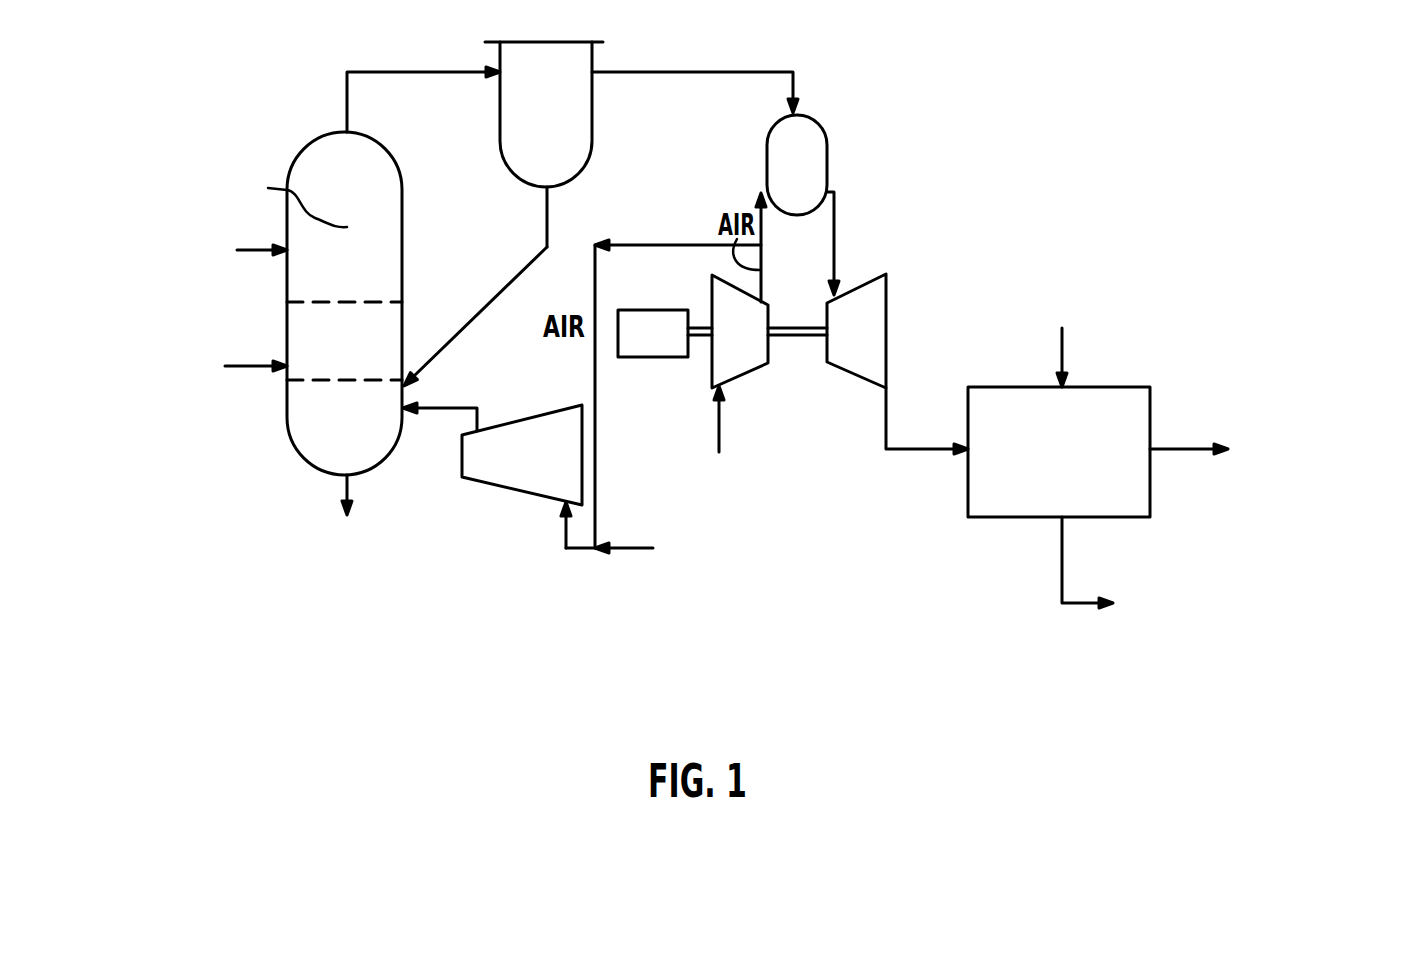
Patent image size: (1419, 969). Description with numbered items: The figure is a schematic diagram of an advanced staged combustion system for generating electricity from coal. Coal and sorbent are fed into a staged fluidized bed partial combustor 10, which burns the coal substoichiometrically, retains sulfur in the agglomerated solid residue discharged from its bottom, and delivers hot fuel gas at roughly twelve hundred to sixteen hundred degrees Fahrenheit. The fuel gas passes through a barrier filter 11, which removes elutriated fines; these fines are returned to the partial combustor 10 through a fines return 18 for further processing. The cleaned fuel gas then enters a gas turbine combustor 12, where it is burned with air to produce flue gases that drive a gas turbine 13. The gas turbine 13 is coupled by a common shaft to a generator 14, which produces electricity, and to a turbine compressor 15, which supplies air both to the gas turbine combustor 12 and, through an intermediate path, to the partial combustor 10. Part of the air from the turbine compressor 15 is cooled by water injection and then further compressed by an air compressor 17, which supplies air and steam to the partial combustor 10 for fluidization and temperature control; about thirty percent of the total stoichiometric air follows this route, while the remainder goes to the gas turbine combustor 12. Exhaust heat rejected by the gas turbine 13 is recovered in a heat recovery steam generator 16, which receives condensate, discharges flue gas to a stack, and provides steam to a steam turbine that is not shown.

The partial combustor 10 is at (300, 155).
The barrier filter 11 is at (592, 115).
The gas turbine combustor 12 is at (810, 118).
The gas turbine 13 is at (848, 372).
The generator 14 is at (643, 357).
The turbine compressor 15 is at (755, 372).
The heat recovery steam generator 16 is at (1125, 386).
The air compressor 17 is at (512, 490).
The fines return 18 is at (482, 307).